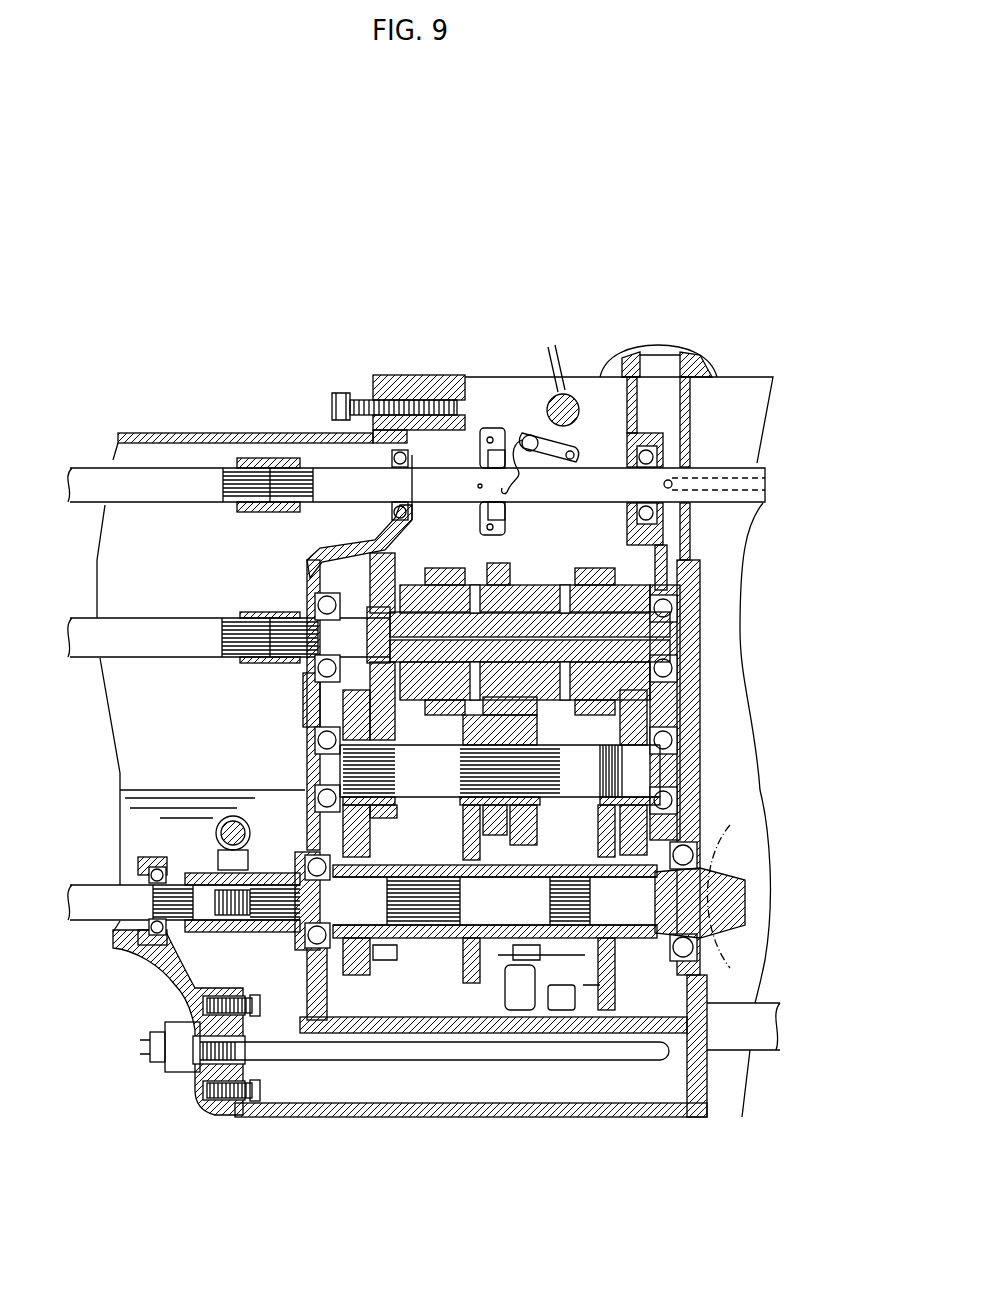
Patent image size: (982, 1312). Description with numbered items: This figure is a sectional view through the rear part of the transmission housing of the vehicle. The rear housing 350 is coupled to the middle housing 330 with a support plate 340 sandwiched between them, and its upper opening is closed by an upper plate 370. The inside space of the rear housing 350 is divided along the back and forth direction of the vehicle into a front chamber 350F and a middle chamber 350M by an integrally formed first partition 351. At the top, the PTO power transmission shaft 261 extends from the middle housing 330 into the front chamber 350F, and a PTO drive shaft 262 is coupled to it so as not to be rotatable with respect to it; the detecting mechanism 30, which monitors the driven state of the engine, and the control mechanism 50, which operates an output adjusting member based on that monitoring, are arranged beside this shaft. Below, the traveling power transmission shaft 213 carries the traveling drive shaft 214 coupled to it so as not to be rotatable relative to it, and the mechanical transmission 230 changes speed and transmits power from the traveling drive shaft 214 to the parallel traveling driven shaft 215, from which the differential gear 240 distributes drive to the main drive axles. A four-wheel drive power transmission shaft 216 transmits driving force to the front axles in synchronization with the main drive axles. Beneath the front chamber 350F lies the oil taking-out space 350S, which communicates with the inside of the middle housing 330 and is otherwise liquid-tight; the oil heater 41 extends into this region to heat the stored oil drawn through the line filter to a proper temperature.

The middle housing 330 is at (178, 432).
The PTO drive shaft 262 is at (330, 473).
The support plate 340 is at (398, 383).
The detecting mechanism 30 is at (495, 424).
The control mechanism 50 is at (537, 362).
The upper plate 370 is at (697, 362).
The PTO power transmission shaft 261 is at (147, 499).
The front chamber 350F is at (598, 537).
The mechanical transmission 230 is at (633, 569).
The traveling power transmission shaft 213 is at (147, 649).
The traveling drive shaft 214 is at (303, 672).
The middle chamber 350M is at (723, 643).
The differential gear 240 is at (758, 848).
The four-wheel drive power transmission shaft 216 is at (130, 912).
The traveling driven shaft 215 is at (622, 918).
The oil taking-out space 350S is at (589, 1094).
The first partition 351 is at (703, 1073).
The oil heater 41 is at (297, 1050).
The rear housing 350 is at (617, 1117).